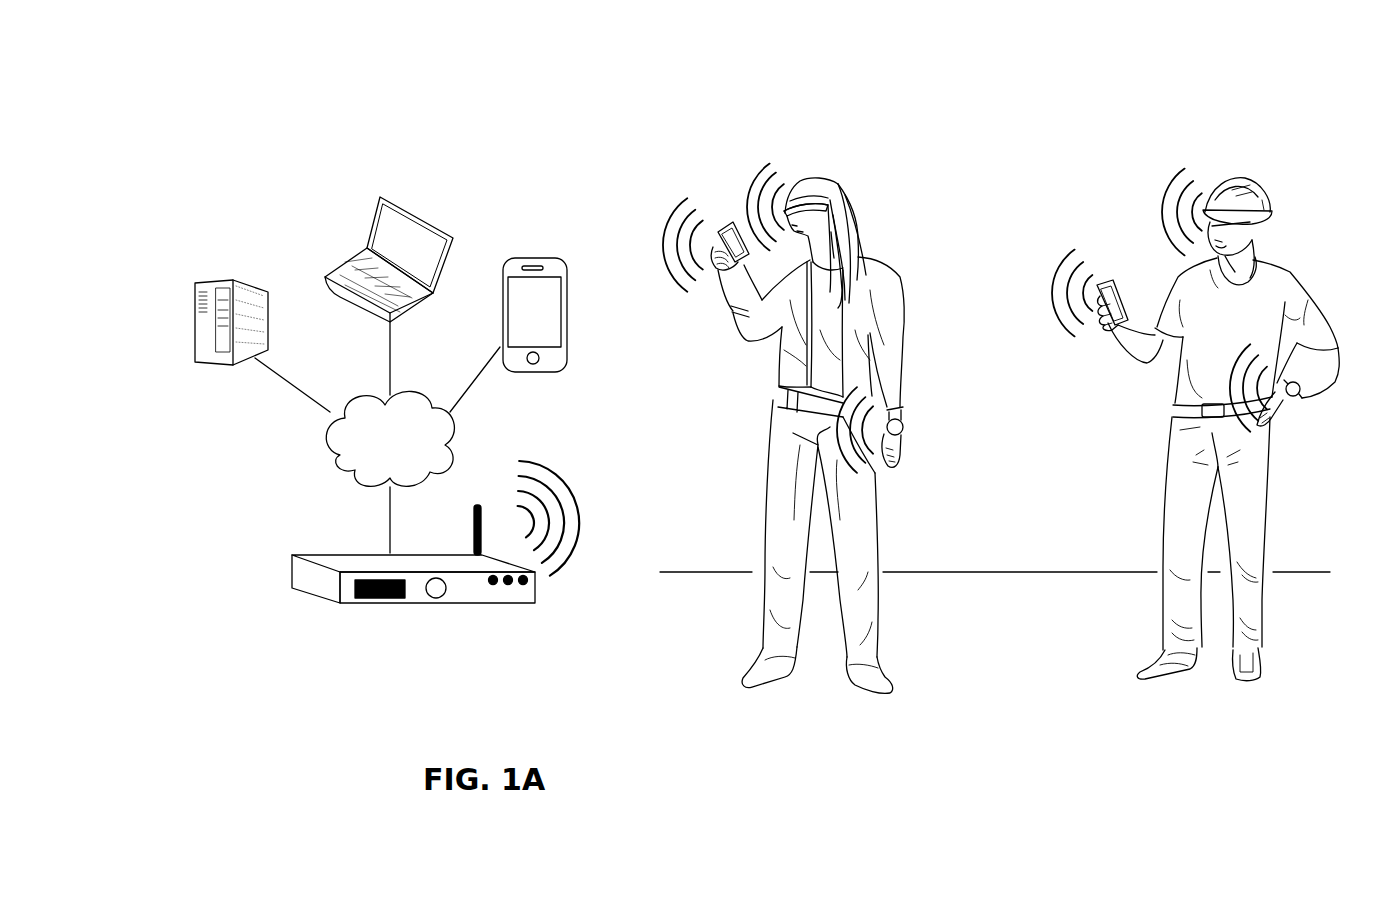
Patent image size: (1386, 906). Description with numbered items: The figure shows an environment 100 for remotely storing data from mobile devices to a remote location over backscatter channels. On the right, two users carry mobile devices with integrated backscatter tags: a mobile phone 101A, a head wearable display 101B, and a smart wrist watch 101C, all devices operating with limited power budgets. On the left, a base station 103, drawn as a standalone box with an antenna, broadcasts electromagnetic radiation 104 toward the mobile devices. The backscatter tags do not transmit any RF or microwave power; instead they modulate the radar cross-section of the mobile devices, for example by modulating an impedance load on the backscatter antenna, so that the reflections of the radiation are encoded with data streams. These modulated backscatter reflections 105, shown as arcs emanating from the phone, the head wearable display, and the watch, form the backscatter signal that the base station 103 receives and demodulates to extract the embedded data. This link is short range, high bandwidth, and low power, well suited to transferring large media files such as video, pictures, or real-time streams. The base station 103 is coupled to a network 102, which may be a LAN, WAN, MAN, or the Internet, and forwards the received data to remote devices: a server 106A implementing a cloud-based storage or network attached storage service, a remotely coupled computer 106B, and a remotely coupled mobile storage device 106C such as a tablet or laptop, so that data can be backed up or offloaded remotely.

The environment 100 is at (299, 90).
The mobile phone 101A is at (719, 214).
The head wearable display 101B is at (820, 196).
The smart wrist watch 101C is at (910, 420).
The network 102 is at (390, 438).
The base station 103 is at (437, 603).
The electromagnetic radiation 104 is at (570, 568).
The modulated backscatter reflections 105 is at (672, 219).
The server 106A is at (223, 281).
The remotely coupled computer 106B is at (346, 263).
The remotely coupled mobile storage device 106C is at (533, 257).